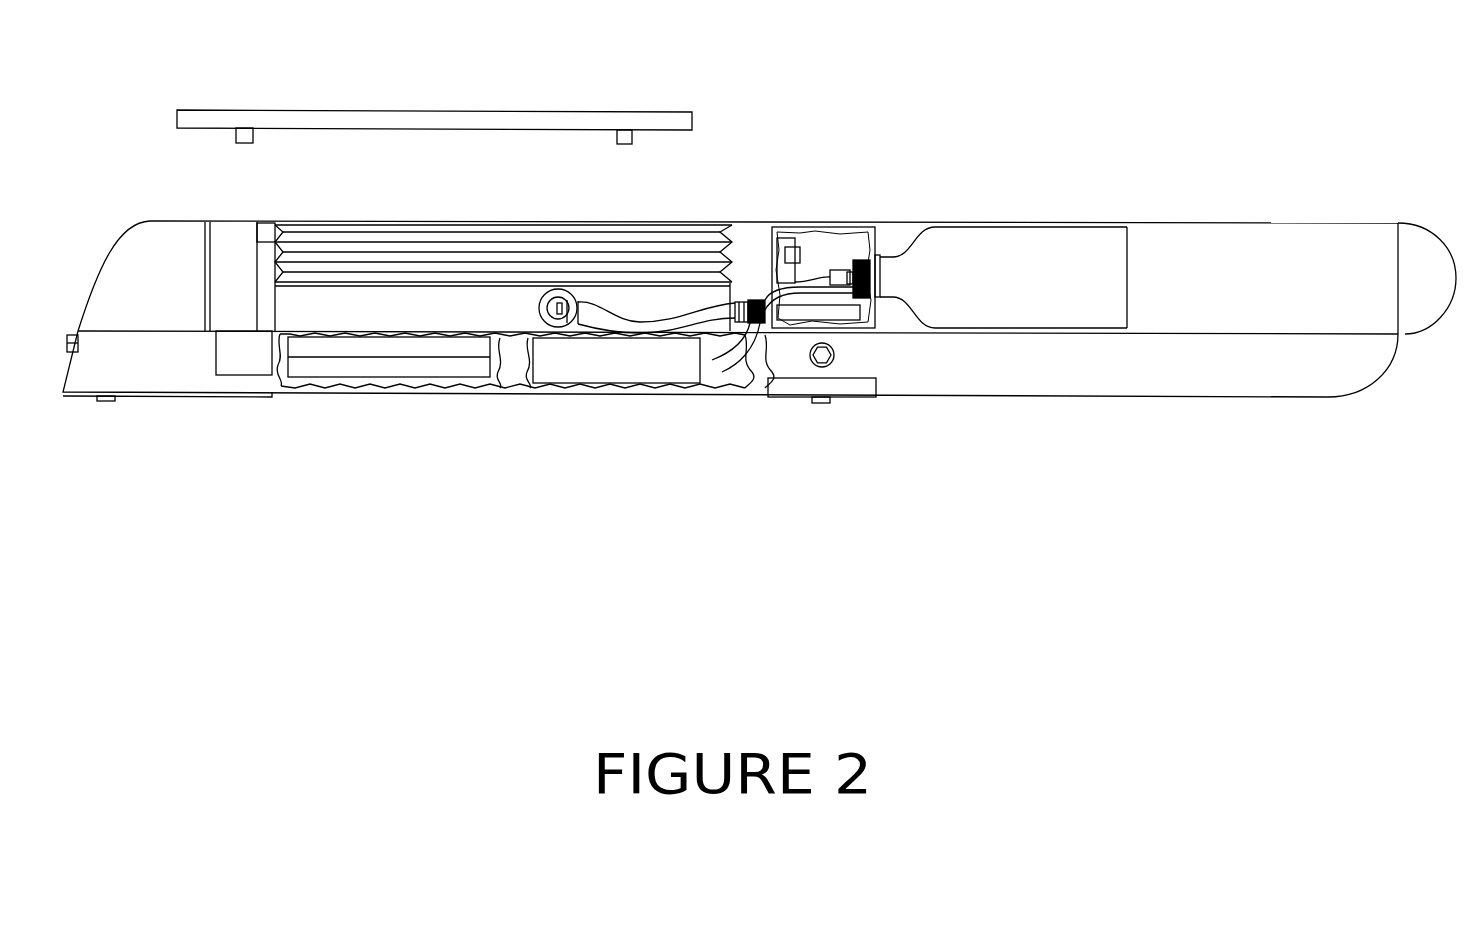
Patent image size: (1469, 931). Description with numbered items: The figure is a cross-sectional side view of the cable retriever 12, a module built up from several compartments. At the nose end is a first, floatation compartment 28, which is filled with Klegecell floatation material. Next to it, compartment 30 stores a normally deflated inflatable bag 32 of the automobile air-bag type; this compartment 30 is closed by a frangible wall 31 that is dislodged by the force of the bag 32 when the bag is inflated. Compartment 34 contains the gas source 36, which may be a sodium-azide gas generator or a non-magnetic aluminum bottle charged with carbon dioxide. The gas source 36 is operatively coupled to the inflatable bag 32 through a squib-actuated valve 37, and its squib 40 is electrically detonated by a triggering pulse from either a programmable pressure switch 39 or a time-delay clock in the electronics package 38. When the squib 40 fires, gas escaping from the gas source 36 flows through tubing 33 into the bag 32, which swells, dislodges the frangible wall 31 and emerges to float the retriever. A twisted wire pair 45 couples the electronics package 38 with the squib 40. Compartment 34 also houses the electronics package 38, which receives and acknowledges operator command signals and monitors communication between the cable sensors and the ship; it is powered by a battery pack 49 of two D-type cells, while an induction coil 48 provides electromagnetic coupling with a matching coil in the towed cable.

The cable retriever unit 12 is at (160, 233).
The floatation compartment 28 is at (1269, 278).
The compartment 30 is at (263, 227).
The frangible wall 31 is at (453, 118).
The inflatable bag 32 is at (480, 238).
The tubing 33 is at (667, 322).
The compartment 34 is at (910, 228).
The gas source 36 is at (1059, 278).
The squib-actuated valve 37 is at (850, 250).
The electronics package 38 is at (375, 347).
The programmable pressure switch 39 is at (775, 261).
The squib 40 is at (840, 275).
The twisted wire pair 45 is at (519, 349).
The induction coil 48 is at (413, 365).
The battery pack 49 is at (615, 365).